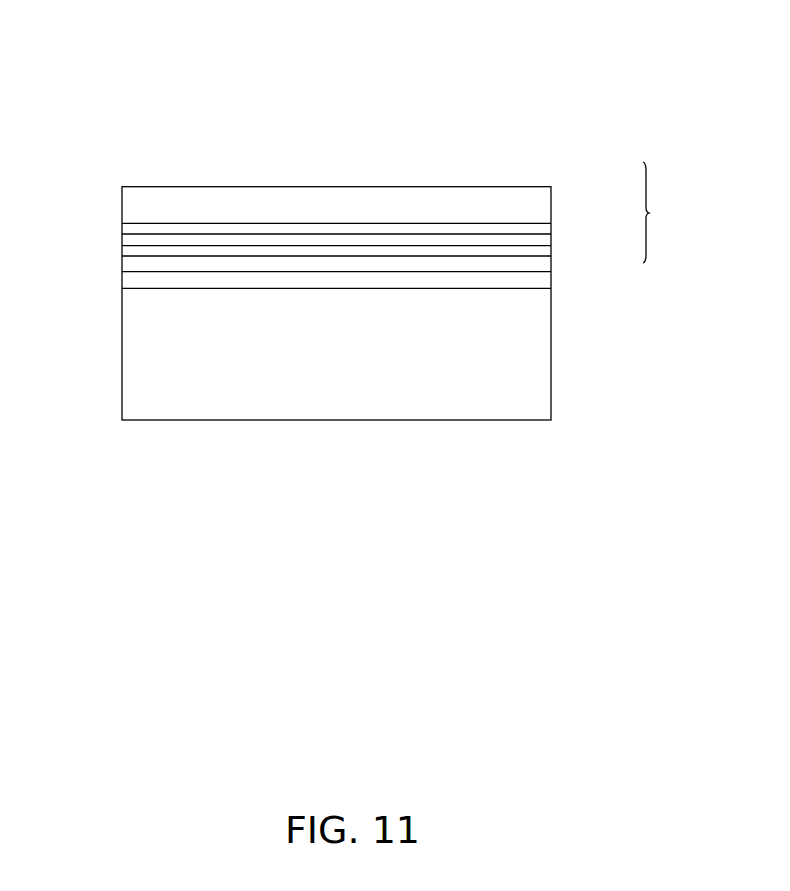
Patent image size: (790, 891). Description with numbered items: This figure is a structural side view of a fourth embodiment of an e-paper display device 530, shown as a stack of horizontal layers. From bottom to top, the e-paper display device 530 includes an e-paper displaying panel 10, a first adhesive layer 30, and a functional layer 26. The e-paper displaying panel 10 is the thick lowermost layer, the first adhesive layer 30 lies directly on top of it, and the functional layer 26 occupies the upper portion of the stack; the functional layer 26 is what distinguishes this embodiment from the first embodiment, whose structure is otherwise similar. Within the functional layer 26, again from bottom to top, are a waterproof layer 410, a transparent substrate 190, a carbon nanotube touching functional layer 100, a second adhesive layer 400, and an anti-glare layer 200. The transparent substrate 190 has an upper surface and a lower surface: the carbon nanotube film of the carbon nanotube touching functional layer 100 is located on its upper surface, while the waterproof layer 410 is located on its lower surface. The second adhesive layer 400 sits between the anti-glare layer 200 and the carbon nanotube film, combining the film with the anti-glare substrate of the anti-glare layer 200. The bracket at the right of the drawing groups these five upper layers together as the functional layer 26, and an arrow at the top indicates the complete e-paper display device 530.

The e-paper display device 530 is at (290, 78).
The e-paper displaying panel 10 is at (523, 363).
The anti-glare layer 200 is at (535, 200).
The second adhesive layer 400 is at (542, 230).
The carbon nanotube touching functional layer 100 is at (543, 238).
The transparent substrate 190 is at (543, 250).
The waterproof layer 410 is at (130, 263).
The first adhesive layer 30 is at (543, 282).
The functional layer 26 is at (661, 212).